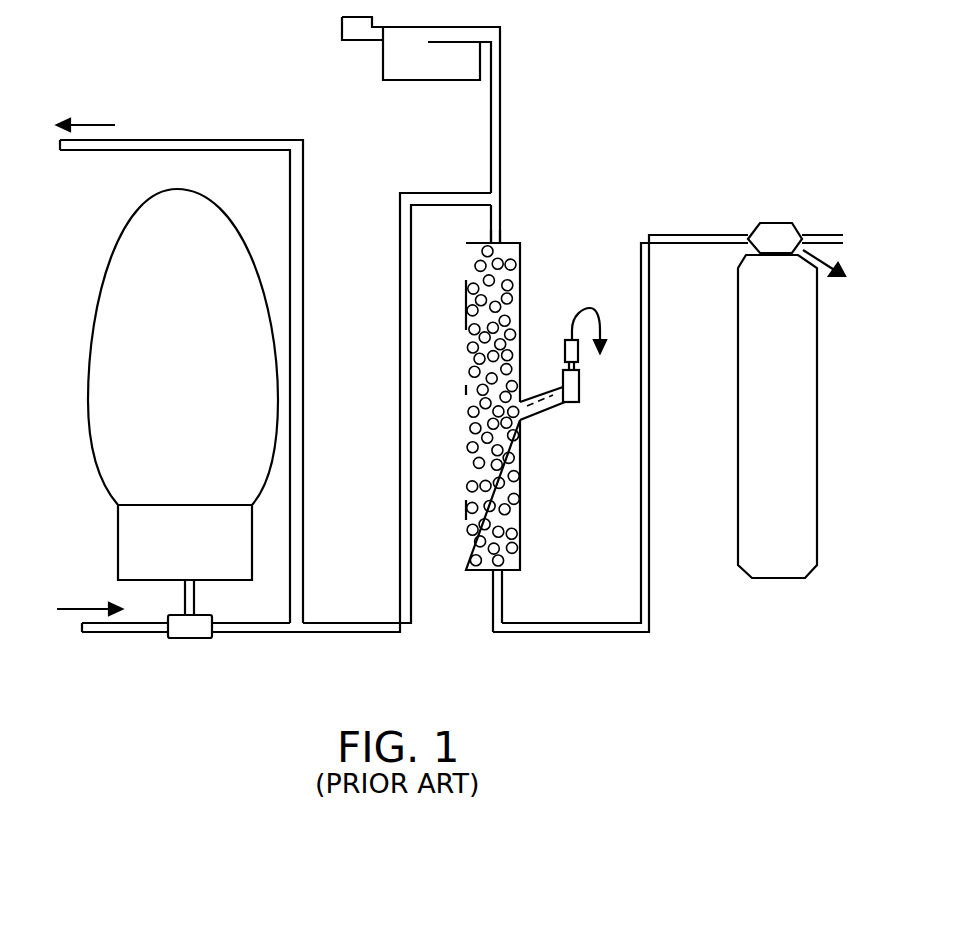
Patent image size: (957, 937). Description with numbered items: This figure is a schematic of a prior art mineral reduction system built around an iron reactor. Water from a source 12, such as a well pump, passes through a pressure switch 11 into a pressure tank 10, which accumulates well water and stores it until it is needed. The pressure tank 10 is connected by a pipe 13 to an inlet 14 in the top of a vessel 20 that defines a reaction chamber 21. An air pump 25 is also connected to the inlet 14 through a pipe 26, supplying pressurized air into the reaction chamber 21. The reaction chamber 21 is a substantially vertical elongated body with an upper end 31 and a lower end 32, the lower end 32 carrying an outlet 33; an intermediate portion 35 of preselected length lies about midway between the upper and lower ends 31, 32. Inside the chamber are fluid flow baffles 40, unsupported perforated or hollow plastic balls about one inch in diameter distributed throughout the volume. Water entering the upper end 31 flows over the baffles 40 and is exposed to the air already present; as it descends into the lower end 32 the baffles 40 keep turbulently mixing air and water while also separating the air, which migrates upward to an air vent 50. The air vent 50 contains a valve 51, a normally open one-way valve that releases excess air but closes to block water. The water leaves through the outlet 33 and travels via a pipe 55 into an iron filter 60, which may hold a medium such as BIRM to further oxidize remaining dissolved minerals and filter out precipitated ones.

The pressure tank 10 is at (190, 372).
The pressure switch 11 is at (192, 638).
The source 12 is at (58, 636).
The pipe 13 is at (345, 633).
The inlet 14 is at (502, 245).
The vessel 20 is at (533, 404).
The reaction chamber 21 is at (470, 324).
The air pump 25 is at (427, 73).
The pipe 26 is at (502, 98).
The upper end 31 is at (456, 295).
The lower end 32 is at (455, 508).
The outlet 33 is at (502, 572).
The intermediate portion 35 is at (465, 389).
The fluid flow baffles 40 is at (523, 488).
The air vent 50 is at (582, 397).
The valve 51 is at (581, 353).
The pipe 55 is at (650, 605).
The iron filter 60 is at (795, 442).